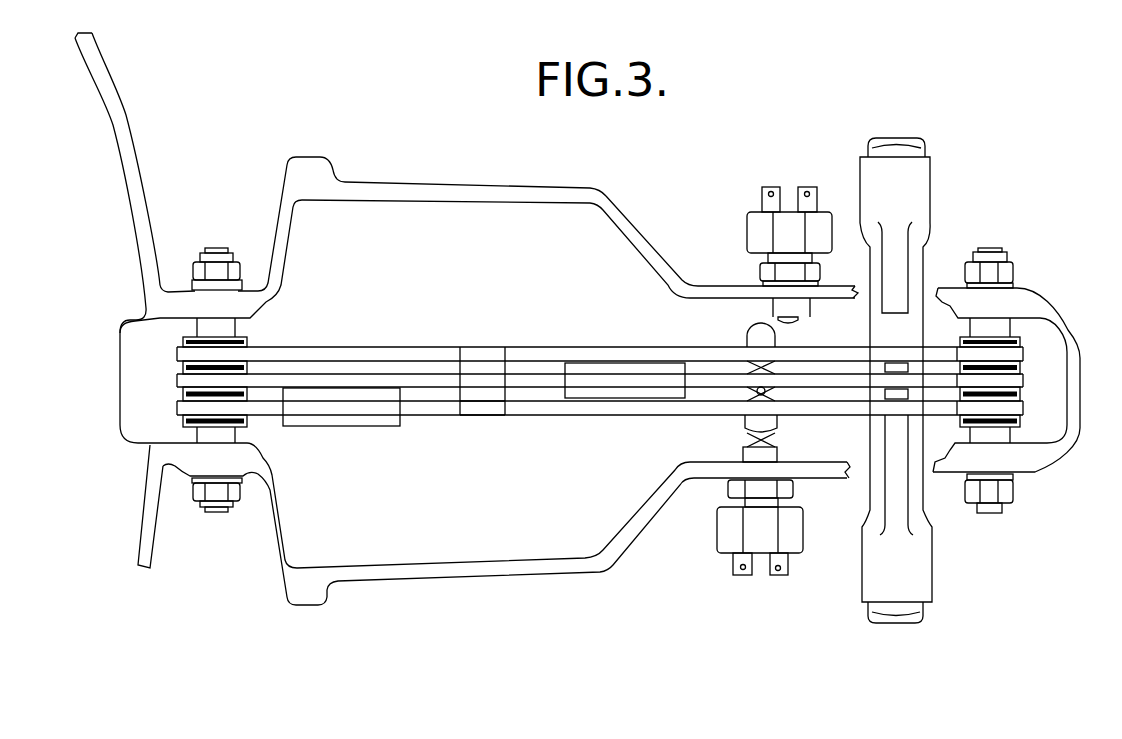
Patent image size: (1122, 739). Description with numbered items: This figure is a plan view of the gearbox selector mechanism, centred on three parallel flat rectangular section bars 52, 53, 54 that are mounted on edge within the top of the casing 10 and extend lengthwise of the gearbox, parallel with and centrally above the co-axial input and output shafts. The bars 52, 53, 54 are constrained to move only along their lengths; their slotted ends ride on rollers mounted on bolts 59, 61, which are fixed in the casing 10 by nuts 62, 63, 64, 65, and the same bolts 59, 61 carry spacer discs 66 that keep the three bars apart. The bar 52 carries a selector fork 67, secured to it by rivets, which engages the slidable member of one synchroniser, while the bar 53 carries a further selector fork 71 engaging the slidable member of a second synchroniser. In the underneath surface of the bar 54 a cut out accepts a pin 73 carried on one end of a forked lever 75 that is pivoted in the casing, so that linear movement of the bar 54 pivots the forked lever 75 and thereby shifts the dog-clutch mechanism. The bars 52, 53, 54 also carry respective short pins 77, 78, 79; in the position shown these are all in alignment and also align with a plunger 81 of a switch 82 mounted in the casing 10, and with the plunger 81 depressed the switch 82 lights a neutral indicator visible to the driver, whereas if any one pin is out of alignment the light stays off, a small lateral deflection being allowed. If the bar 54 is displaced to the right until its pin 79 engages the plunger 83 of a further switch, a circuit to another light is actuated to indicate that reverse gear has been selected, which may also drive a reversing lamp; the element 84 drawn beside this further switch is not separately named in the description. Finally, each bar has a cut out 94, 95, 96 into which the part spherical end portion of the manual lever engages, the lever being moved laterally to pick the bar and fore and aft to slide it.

The casing 10 is at (320, 160).
The bar 52 is at (430, 408).
The bar 53 is at (525, 384).
The bar 54 is at (542, 354).
The bolt 59 is at (220, 253).
The bolt 61 is at (980, 252).
The nut 62 is at (195, 273).
The nut 63 is at (197, 490).
The nut 64 is at (1012, 270).
The nut 65 is at (1007, 492).
The spacer discs 66 is at (183, 421).
The selector fork 67 is at (300, 418).
The selector fork 71 is at (578, 392).
The pin 73 is at (895, 363).
The forked lever 75 is at (920, 218).
The pin 77 is at (768, 423).
The pin 78 is at (760, 391).
The pin 79 is at (752, 338).
The plunger 81 is at (745, 445).
The switch 82 is at (767, 528).
The plunger 83 is at (800, 321).
The upper switch 84 is at (825, 247).
The cut out 94 is at (485, 410).
The cut out 95 is at (475, 380).
The cut out 96 is at (498, 354).